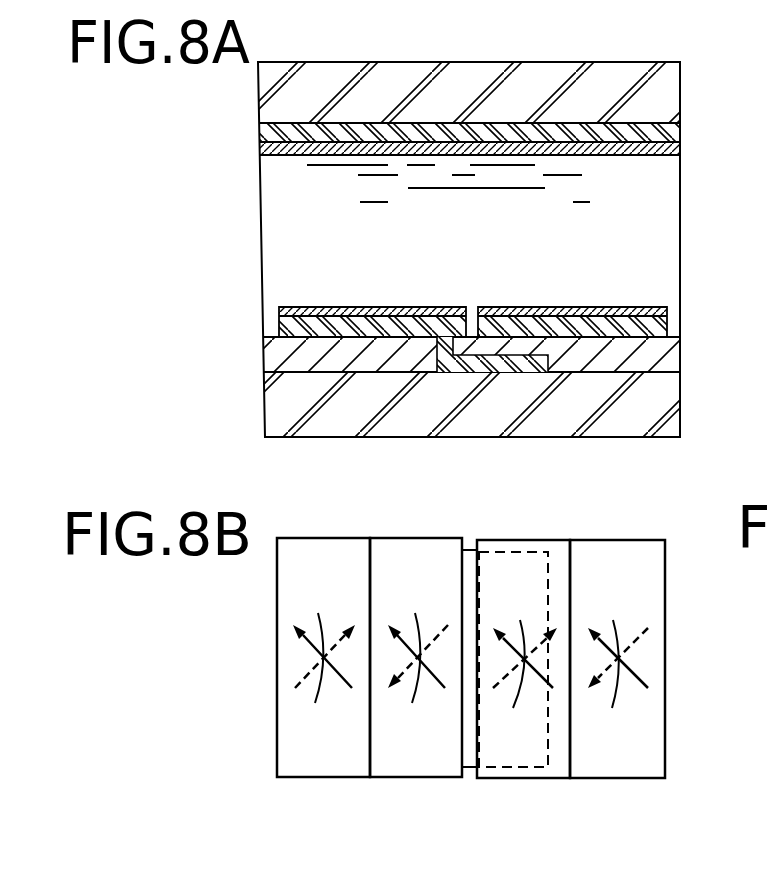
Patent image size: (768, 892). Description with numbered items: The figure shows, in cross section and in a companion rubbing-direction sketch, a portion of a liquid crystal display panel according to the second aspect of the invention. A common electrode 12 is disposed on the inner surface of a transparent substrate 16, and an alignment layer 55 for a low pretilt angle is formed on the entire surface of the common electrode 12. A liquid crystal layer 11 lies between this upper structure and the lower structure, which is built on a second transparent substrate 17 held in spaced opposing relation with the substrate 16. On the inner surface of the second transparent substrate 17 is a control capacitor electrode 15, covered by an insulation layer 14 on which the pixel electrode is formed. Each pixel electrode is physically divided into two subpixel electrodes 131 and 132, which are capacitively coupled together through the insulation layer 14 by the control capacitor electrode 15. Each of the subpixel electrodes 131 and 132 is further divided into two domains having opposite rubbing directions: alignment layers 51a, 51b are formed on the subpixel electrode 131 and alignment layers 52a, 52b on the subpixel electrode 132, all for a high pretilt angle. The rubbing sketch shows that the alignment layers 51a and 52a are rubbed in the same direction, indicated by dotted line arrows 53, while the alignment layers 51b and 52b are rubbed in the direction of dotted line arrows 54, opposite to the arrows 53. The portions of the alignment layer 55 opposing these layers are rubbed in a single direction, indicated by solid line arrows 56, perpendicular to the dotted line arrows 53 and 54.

In FIG. 8A, the transparent substrate 16 is at (647, 73).
In FIG. 8A, the common electrode 12 is at (668, 137).
In FIG. 8A, the alignment layer for a low pretilt angle 55 is at (663, 152).
In FIG. 8A, the liquid crystal layer 11 is at (672, 228).
In FIG. 8A, the insulation layer 14 is at (667, 356).
In FIG. 8A, the second transparent substrate 17 is at (665, 420).
In FIG. 8A, the control capacitor electrode 15 is at (475, 367).
In FIG. 8B, the control capacitor electrode 15 is at (515, 552).
In FIG. 8A, the subpixel electrode 131 is at (322, 330).
In FIG. 8A, the subpixel electrode 132 is at (608, 333).
In FIG. 8A, the alignment layer 51a is at (300, 306).
In FIG. 8B, the alignment layer 51a is at (327, 780).
In FIG. 8A, the alignment layer 51b is at (411, 306).
In FIG. 8B, the alignment layer 51b is at (418, 780).
In FIG. 8A, the alignment layer 52a is at (512, 306).
In FIG. 8B, the alignment layer 52a is at (523, 782).
In FIG. 8A, the alignment layer 52b is at (612, 306).
In FIG. 8B, the alignment layer 52b is at (622, 782).
In FIG. 8B, the dotted line arrows 53 is at (425, 687).
In FIG. 8B, the dotted line arrows 54 is at (518, 687).
In FIG. 8B, the solid line arrows 56 is at (467, 638).